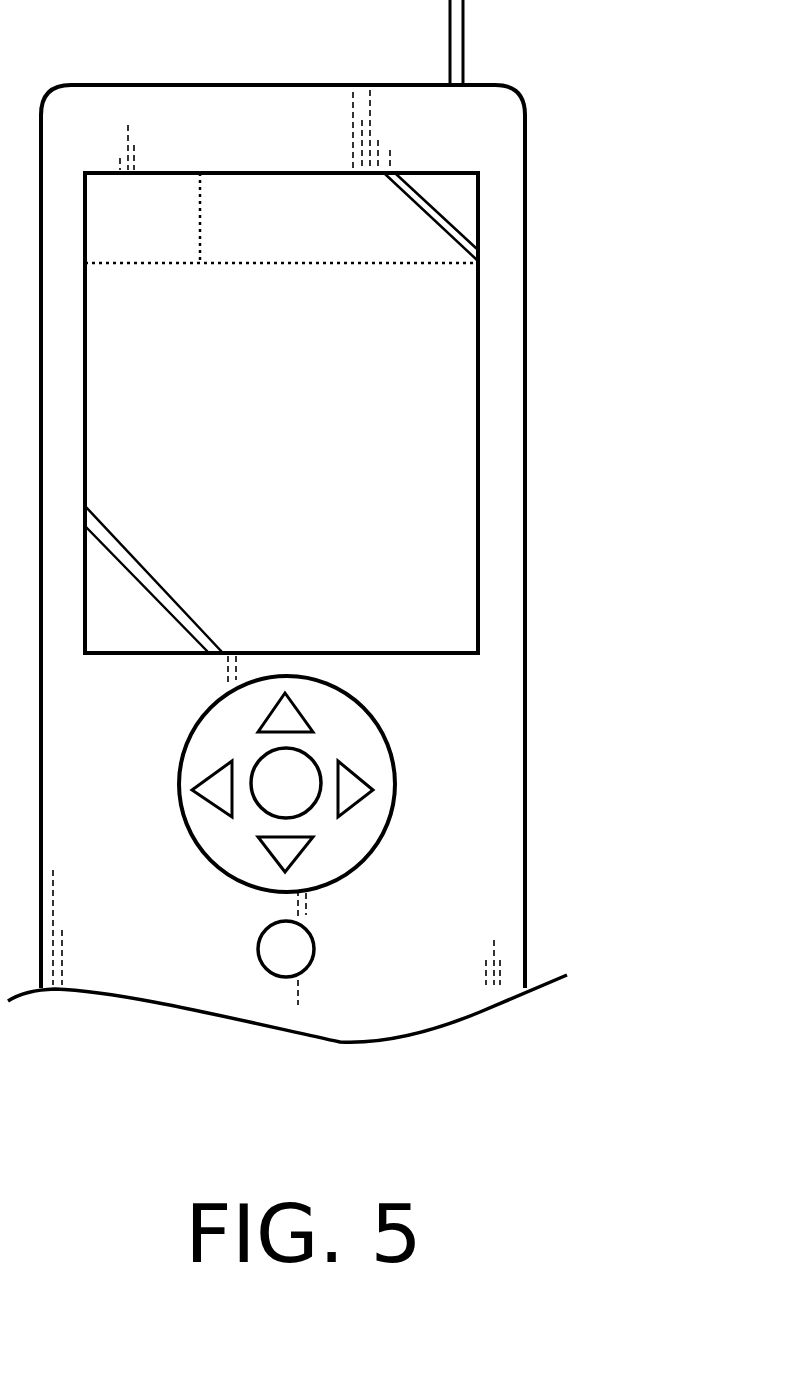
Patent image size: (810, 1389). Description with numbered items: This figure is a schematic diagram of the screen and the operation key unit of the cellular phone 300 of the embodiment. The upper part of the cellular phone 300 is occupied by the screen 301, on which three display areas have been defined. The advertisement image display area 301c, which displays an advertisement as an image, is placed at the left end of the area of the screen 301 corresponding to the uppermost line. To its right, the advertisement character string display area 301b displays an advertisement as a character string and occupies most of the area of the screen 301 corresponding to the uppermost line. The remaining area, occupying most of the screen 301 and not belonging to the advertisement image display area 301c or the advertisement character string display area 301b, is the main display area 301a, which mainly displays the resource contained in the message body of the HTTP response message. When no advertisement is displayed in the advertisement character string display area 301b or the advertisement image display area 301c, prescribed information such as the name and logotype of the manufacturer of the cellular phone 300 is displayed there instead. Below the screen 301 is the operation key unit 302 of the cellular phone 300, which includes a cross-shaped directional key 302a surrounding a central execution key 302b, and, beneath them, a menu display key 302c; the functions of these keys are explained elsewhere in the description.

The cellular phone 300 is at (525, 143).
The screen 301 is at (478, 357).
The main display area 301a is at (452, 490).
The advertisement character string display area 301b is at (341, 190).
The advertisement image display area 301c is at (136, 193).
The operation key unit 302 is at (415, 840).
The cross-shaped directional key 302a is at (370, 742).
The execution key 302b is at (267, 757).
The menu display key 302c is at (258, 942).